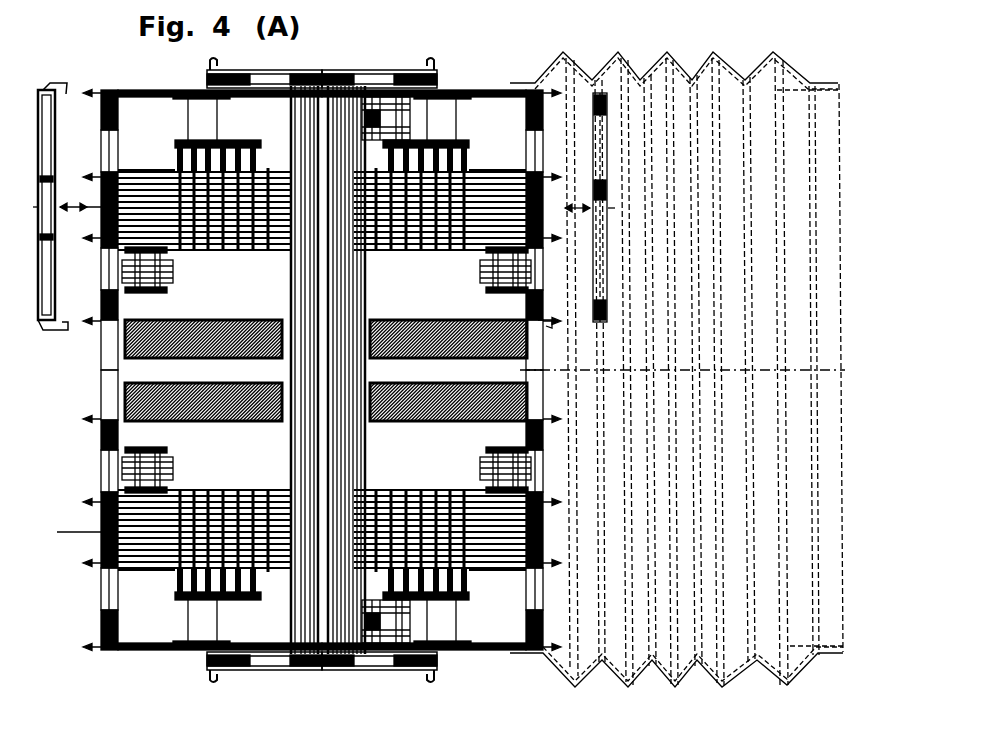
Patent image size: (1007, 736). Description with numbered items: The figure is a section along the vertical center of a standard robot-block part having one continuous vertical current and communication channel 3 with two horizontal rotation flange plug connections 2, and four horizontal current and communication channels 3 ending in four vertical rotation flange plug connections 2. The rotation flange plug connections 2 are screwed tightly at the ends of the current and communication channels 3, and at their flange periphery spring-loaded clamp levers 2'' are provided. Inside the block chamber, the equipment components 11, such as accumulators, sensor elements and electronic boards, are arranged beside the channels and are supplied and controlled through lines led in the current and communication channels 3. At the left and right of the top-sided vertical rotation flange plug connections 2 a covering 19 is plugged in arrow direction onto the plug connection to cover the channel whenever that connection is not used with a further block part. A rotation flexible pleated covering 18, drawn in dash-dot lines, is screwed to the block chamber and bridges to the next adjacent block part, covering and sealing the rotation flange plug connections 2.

The rotation-flange plug connection 2 is at (324, 397).
The spring-loaded clamp lever 2'' is at (325, 209).
The current and communication channel 3 is at (403, 68).
The equipment component 11 is at (367, 413).
The rotation flexible pleated covering 18 is at (657, 668).
The covering 19 is at (60, 320).